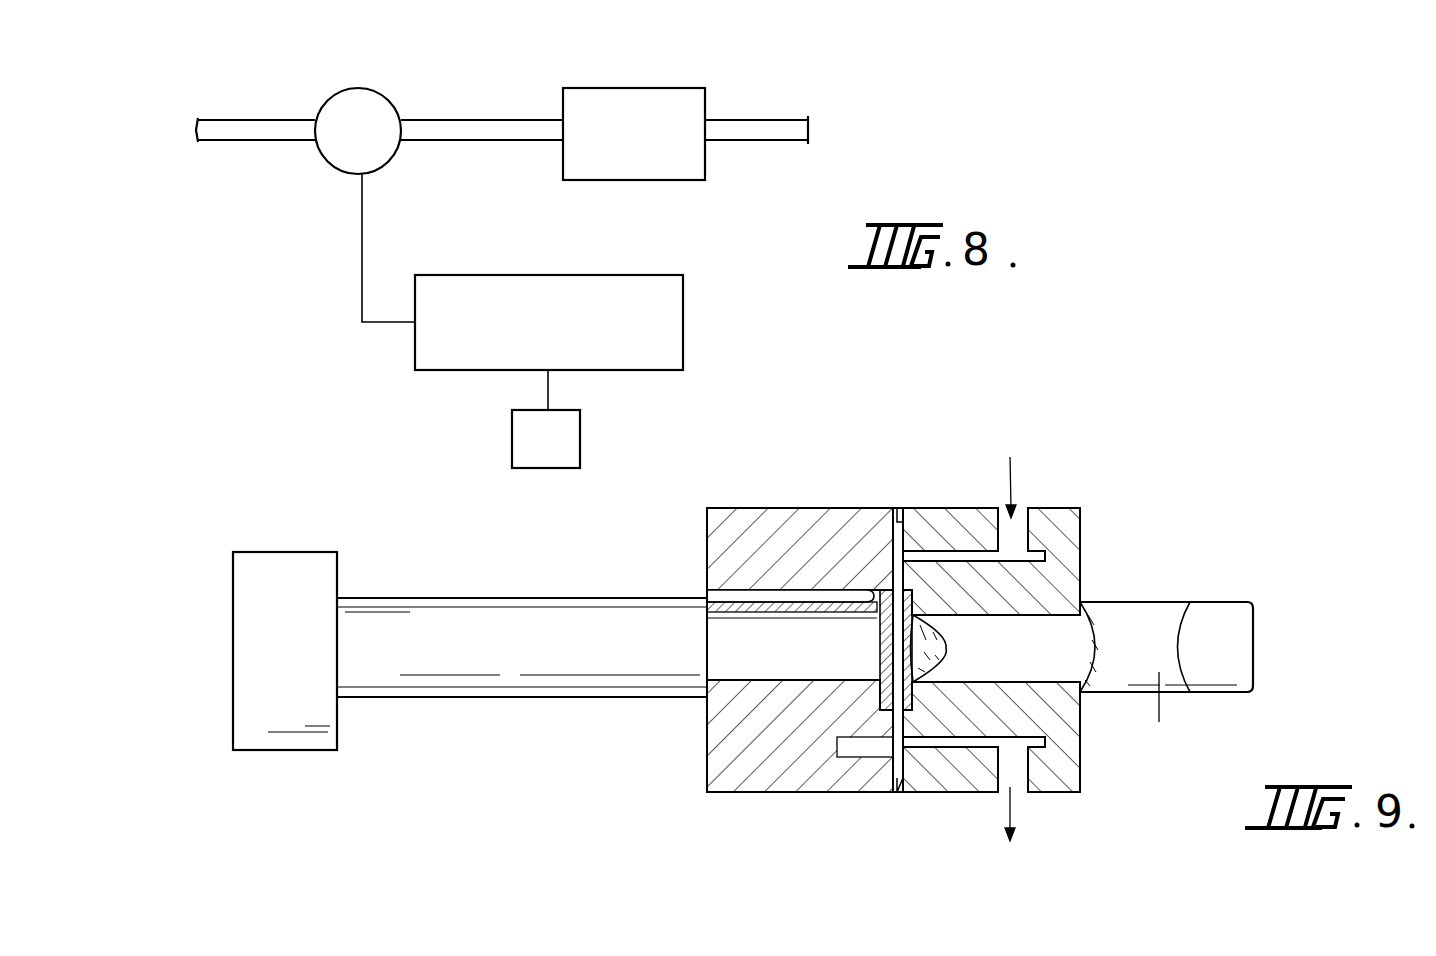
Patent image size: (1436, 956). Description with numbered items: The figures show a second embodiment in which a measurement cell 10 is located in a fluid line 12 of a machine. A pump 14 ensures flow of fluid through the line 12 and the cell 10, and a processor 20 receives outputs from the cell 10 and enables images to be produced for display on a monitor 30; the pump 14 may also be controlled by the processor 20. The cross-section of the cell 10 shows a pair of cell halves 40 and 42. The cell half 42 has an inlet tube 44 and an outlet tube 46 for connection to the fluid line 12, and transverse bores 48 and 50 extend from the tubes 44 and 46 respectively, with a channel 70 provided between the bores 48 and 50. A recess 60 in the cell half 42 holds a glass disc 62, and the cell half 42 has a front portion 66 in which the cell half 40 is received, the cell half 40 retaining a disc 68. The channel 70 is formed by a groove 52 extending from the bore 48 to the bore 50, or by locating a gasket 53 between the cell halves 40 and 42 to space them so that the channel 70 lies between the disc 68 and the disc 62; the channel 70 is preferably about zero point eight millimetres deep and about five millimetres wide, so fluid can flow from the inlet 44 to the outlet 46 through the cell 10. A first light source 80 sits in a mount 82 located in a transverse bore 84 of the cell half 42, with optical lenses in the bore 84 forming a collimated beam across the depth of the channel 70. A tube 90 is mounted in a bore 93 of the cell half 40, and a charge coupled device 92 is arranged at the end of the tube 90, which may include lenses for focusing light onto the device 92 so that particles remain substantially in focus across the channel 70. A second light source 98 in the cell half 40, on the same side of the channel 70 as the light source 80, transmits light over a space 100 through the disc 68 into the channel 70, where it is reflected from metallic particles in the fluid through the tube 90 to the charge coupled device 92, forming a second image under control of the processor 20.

In FIG. 8, the measurement cell 10 is at (610, 120).
In FIG. 9, the measurement cell 10 is at (706, 500).
In FIG. 8, the fluid line 12 is at (750, 133).
In FIG. 8, the pump 14 is at (357, 120).
In FIG. 8, the processor 20 is at (565, 338).
In FIG. 8, the monitor 30 is at (528, 440).
In FIG. 9, the cell half 40 is at (738, 745).
In FIG. 9, the cell half 42 is at (1078, 768).
In FIG. 9, the inlet tube 44 is at (1020, 535).
In FIG. 9, the outlet tube 46 is at (1003, 773).
In FIG. 9, the transverse bore 48 is at (968, 556).
In FIG. 9, the transverse bore 50 is at (966, 744).
In FIG. 9, the groove 52 is at (887, 620).
In FIG. 9, the gasket 53 is at (897, 778).
In FIG. 9, the recess 60 is at (910, 594).
In FIG. 9, the glass disc 62 is at (930, 645).
In FIG. 9, the front portion 66 is at (880, 693).
In FIG. 9, the disc 68 is at (893, 580).
In FIG. 9, the channel 70 is at (897, 723).
In FIG. 9, the first light source 80 is at (1238, 658).
In FIG. 9, the mount 82 is at (1162, 717).
In FIG. 9, the transverse bore 84 is at (1047, 598).
In FIG. 9, the tube 90 is at (465, 667).
In FIG. 9, the charge coupled device 92 is at (298, 670).
In FIG. 9, the bore 93 is at (720, 678).
In FIG. 9, the second light source 98 is at (733, 600).
In FIG. 9, the space 100 is at (862, 594).